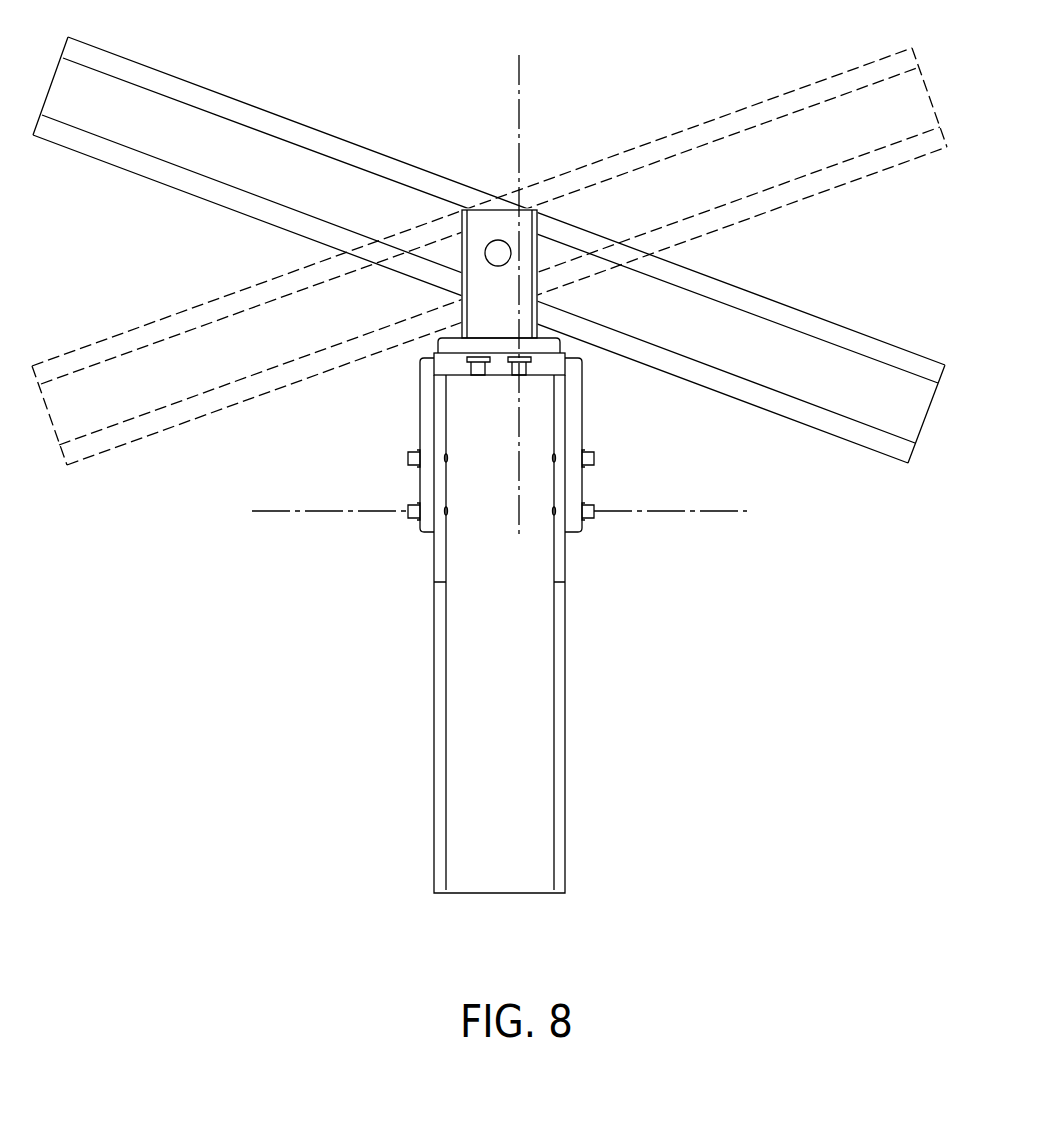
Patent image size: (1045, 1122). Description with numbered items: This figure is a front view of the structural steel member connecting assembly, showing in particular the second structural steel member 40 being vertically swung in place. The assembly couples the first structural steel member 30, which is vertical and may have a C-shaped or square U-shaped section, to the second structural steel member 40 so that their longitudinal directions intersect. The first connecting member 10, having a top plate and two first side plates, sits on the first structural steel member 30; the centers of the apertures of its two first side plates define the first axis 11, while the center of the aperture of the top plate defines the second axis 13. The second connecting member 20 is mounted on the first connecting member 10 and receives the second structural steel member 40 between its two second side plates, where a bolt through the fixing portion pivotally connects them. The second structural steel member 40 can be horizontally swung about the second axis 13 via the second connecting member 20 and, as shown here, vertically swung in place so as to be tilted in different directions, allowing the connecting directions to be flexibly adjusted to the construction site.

The first connecting member 10 is at (592, 405).
The first axis 11 is at (678, 511).
The second axis 13 is at (519, 80).
The second connecting member 20 is at (483, 183).
The first structural steel member 30 is at (566, 810).
The second structural steel member 40 is at (820, 315).